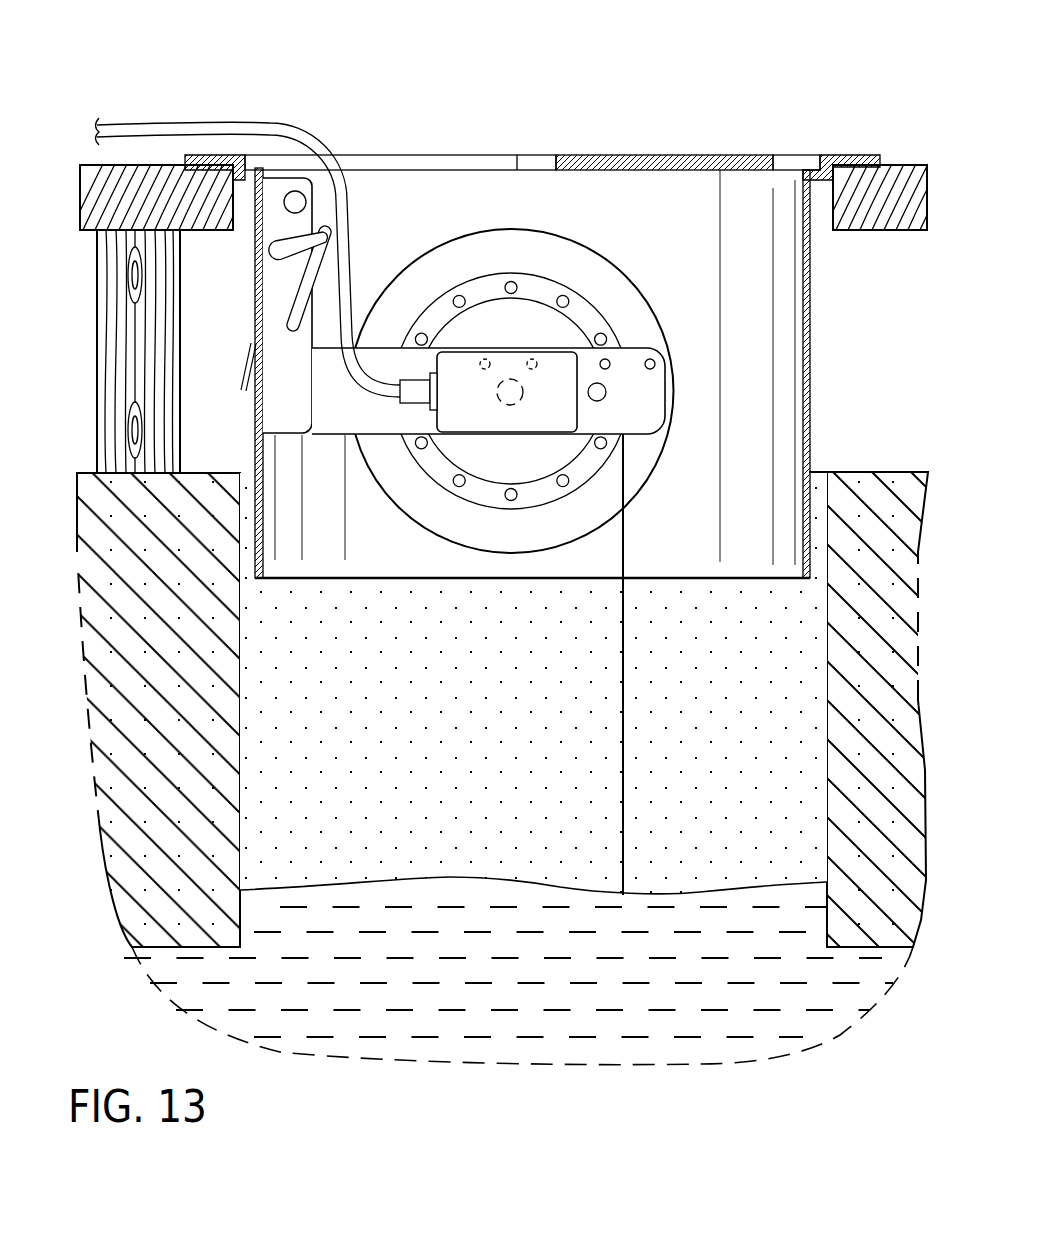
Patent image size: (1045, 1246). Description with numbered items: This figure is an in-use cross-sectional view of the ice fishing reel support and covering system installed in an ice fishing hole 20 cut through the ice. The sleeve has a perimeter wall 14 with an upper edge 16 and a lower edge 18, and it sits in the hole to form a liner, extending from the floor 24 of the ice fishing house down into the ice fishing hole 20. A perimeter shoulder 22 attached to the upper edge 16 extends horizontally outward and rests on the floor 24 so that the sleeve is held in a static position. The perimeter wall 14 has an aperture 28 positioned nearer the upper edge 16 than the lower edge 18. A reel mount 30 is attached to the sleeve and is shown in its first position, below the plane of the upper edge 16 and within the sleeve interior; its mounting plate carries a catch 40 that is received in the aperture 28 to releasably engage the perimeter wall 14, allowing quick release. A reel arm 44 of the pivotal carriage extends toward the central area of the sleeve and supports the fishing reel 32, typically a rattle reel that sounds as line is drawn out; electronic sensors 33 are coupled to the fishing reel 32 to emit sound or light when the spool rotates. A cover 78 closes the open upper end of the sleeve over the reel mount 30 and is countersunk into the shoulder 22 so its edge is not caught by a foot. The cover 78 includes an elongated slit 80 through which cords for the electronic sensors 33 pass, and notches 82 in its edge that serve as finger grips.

The perimeter wall 14 is at (812, 338).
The upper edge 16 is at (818, 155).
The lower edge 18 is at (805, 581).
The ice fishing hole 20 is at (327, 848).
The perimeter shoulder 22 is at (857, 155).
The floor 24 is at (145, 165).
The aperture 28 is at (255, 227).
The reel mount 30 is at (292, 442).
The fishing reel 32 is at (582, 237).
The electronic sensors 33 is at (457, 385).
The catch 40 is at (243, 378).
The reel arm 44 is at (650, 400).
The cover 78 is at (598, 155).
The elongated slit 80 is at (380, 155).
The notches 82 is at (795, 155).